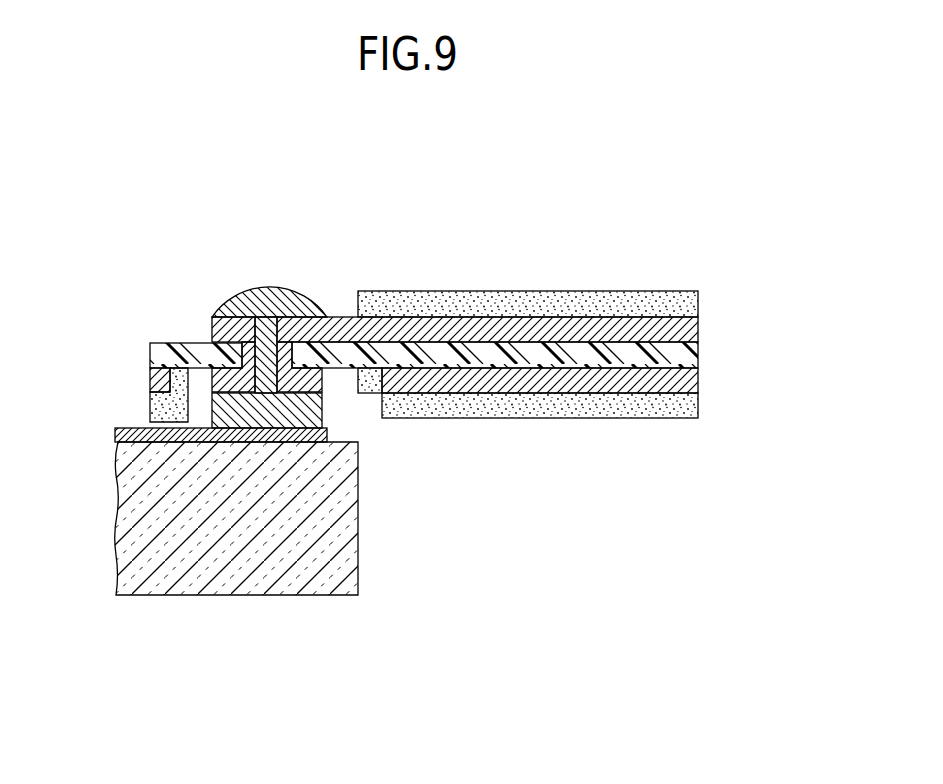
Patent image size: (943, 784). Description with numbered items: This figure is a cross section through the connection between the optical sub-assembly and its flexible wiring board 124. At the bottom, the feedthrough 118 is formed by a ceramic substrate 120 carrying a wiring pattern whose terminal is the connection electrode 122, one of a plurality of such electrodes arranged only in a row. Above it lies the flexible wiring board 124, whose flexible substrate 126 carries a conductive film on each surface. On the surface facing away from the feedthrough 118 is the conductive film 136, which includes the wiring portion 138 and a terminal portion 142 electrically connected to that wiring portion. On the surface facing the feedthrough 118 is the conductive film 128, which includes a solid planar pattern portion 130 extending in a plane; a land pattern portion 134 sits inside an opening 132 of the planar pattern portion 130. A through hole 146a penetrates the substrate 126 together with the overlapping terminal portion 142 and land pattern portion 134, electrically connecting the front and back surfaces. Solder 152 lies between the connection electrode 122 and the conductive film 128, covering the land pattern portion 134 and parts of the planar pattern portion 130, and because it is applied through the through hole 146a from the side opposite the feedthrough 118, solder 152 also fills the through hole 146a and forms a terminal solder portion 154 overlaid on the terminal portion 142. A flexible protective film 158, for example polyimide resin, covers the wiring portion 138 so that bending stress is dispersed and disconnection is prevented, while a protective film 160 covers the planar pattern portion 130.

The feedthrough 118 is at (325, 620).
The ceramic substrate 120 is at (355, 535).
The connection electrode 122 is at (130, 433).
The flexible wiring board 124 is at (658, 268).
The substrate 126 is at (683, 360).
The conductive film 128 is at (710, 383).
The planar pattern portion 130 is at (618, 385).
The opening 132 is at (376, 387).
The land pattern portion 134 is at (322, 388).
The conductive film 136 is at (710, 333).
The wiring portion 138 is at (478, 322).
The terminal portion 142 is at (332, 297).
The through hole 146a is at (270, 330).
The solder 152 is at (312, 412).
The terminal solder portion 154 is at (240, 296).
The protective film 158 is at (683, 305).
The protective film 160 is at (692, 405).